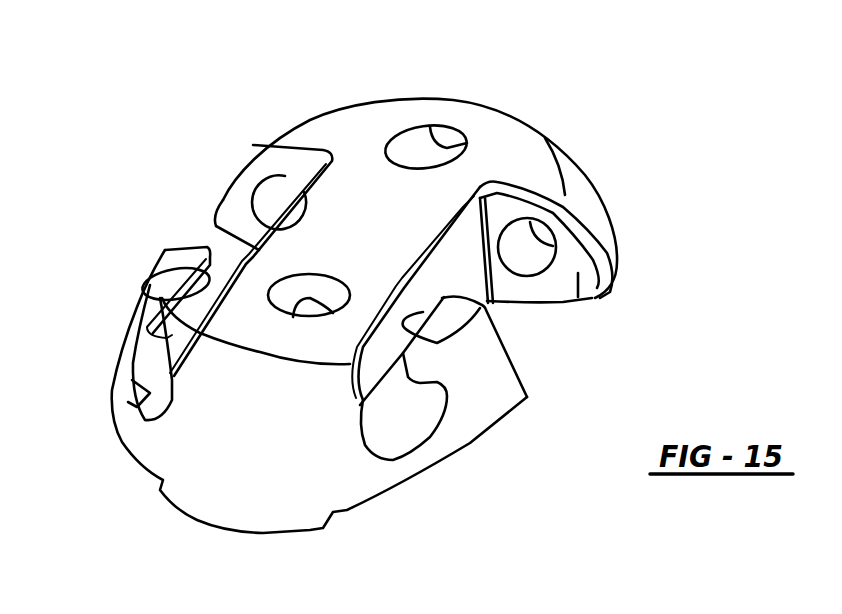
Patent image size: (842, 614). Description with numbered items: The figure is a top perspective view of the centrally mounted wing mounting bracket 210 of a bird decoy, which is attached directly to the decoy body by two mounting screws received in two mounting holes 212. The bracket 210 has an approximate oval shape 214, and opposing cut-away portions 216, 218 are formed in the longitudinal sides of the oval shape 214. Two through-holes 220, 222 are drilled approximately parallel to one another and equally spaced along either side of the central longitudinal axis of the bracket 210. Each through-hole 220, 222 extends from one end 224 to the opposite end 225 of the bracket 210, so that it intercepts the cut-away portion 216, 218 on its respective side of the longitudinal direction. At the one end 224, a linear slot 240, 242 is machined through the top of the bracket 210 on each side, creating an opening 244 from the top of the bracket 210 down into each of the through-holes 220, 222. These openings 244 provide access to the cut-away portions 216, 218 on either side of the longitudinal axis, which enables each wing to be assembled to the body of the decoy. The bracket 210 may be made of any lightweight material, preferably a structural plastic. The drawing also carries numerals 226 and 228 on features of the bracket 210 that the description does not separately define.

The centrally mounted wing mounting bracket 210 is at (372, 80).
The mounting holes 212 is at (467, 143).
The oval shape 214 is at (599, 151).
The cut-away portion 216 is at (513, 327).
The cut-away portion 218 is at (223, 250).
The through-hole 220 is at (553, 246).
The through-hole 222 is at (255, 185).
The one end 224 is at (223, 530).
The opposite end 225 is at (455, 103).
The fold edge 226 is at (578, 295).
The raised tab 228 is at (230, 203).
The linear slot 240 is at (405, 289).
The linear slot 242 is at (143, 280).
The opening 244 is at (172, 335).